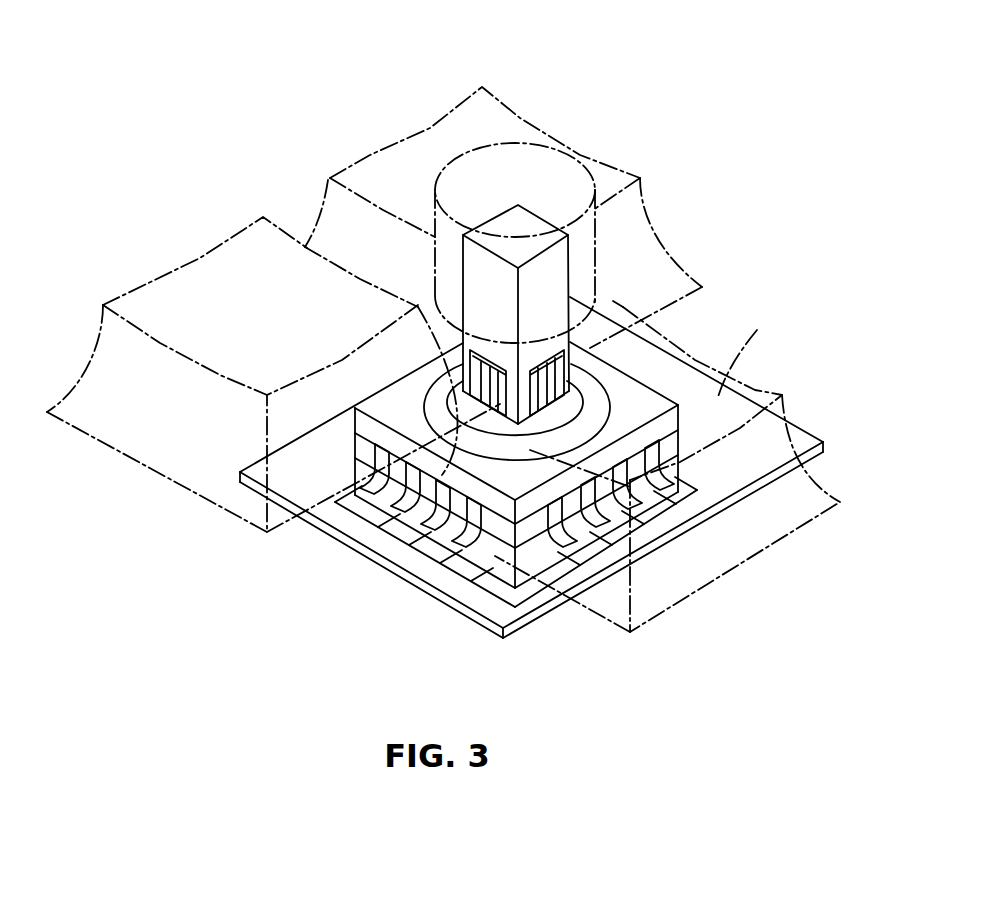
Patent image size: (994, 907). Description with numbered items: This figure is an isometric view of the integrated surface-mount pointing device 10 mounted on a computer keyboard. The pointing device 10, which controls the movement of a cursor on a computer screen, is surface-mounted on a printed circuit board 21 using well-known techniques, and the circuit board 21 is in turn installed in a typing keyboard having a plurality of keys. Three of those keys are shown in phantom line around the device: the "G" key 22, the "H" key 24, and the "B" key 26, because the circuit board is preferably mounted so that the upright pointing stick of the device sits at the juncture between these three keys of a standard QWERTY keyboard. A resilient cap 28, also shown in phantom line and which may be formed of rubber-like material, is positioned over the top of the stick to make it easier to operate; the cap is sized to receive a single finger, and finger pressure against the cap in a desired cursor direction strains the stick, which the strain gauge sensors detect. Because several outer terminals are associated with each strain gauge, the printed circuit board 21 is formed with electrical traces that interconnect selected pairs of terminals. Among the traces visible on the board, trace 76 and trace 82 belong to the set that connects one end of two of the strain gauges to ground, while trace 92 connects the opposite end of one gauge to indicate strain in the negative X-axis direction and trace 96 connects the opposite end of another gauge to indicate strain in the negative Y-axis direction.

The integrated surface-mount pointing device 10 is at (643, 370).
The printed circuit board 21 is at (388, 549).
The "G" key 22 is at (185, 262).
The "H" key 24 is at (407, 158).
The "B" key 26 is at (757, 331).
The resilient cap 28 is at (540, 170).
The trace 76 is at (567, 575).
The trace 82 is at (463, 572).
The trace 92 is at (340, 510).
The trace 96 is at (680, 512).